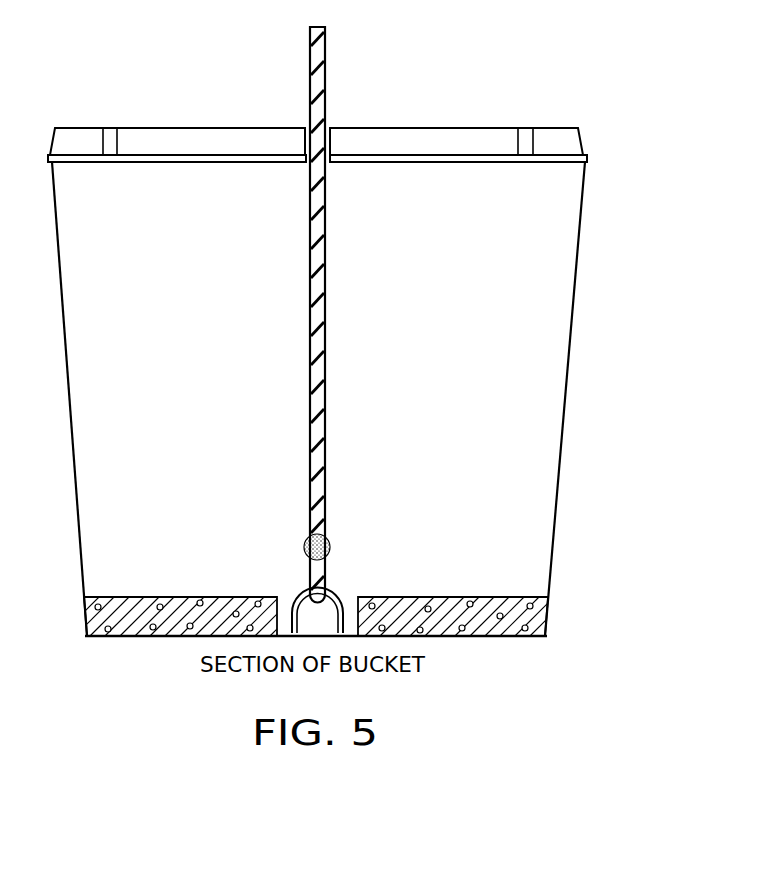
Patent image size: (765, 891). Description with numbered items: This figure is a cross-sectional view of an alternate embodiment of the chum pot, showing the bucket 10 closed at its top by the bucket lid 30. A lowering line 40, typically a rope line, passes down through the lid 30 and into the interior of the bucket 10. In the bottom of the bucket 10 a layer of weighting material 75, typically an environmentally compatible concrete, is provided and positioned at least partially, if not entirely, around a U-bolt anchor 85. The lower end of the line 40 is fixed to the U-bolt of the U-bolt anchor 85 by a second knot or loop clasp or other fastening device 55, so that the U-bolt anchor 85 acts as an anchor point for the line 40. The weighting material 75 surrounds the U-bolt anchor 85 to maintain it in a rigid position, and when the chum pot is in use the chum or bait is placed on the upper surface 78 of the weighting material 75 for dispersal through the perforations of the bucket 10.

The bucket 10 is at (560, 449).
The bucket lid 30 is at (583, 140).
The lowering line 40 is at (326, 275).
The second knot or loop clasp or other fastening device 55 is at (331, 545).
The weighting material 75 is at (435, 597).
The upper surface of the weighting material 78 is at (175, 597).
The U-bolt anchor 85 is at (328, 593).